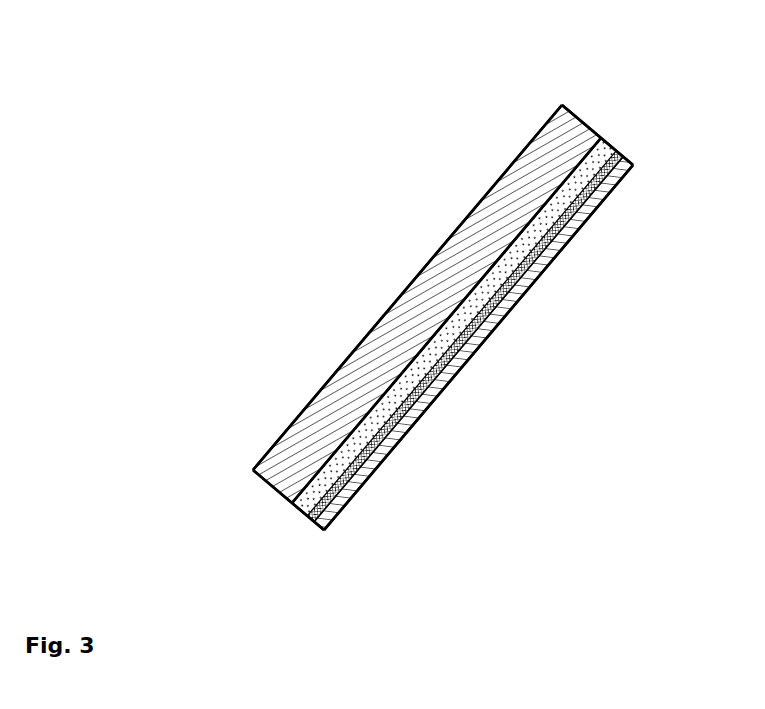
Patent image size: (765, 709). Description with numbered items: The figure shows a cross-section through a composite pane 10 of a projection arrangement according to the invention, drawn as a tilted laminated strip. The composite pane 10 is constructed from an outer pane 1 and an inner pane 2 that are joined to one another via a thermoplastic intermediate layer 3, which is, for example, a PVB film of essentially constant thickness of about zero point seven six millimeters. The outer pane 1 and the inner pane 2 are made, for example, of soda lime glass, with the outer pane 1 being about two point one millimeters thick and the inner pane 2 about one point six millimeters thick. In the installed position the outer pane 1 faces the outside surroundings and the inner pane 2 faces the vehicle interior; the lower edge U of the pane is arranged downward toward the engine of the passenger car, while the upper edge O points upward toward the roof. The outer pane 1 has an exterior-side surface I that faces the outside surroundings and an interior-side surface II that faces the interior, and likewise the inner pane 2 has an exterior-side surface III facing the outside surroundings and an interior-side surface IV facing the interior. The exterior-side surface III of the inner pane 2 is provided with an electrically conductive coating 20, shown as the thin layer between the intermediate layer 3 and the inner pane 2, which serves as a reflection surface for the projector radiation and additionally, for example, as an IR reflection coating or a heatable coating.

The composite pane 10 is at (466, 284).
The outer pane 1 is at (505, 195).
The thermoplastic intermediate layer 3 is at (603, 142).
The electrically conductive coating 20 is at (614, 153).
The inner pane 2 is at (627, 162).
The upper edge O is at (577, 110).
The lower edge U is at (283, 502).
The exterior-side surface I is at (306, 394).
The interior-side surface II is at (300, 474).
The exterior-side surface III is at (444, 373).
The interior-side surface IV is at (416, 435).